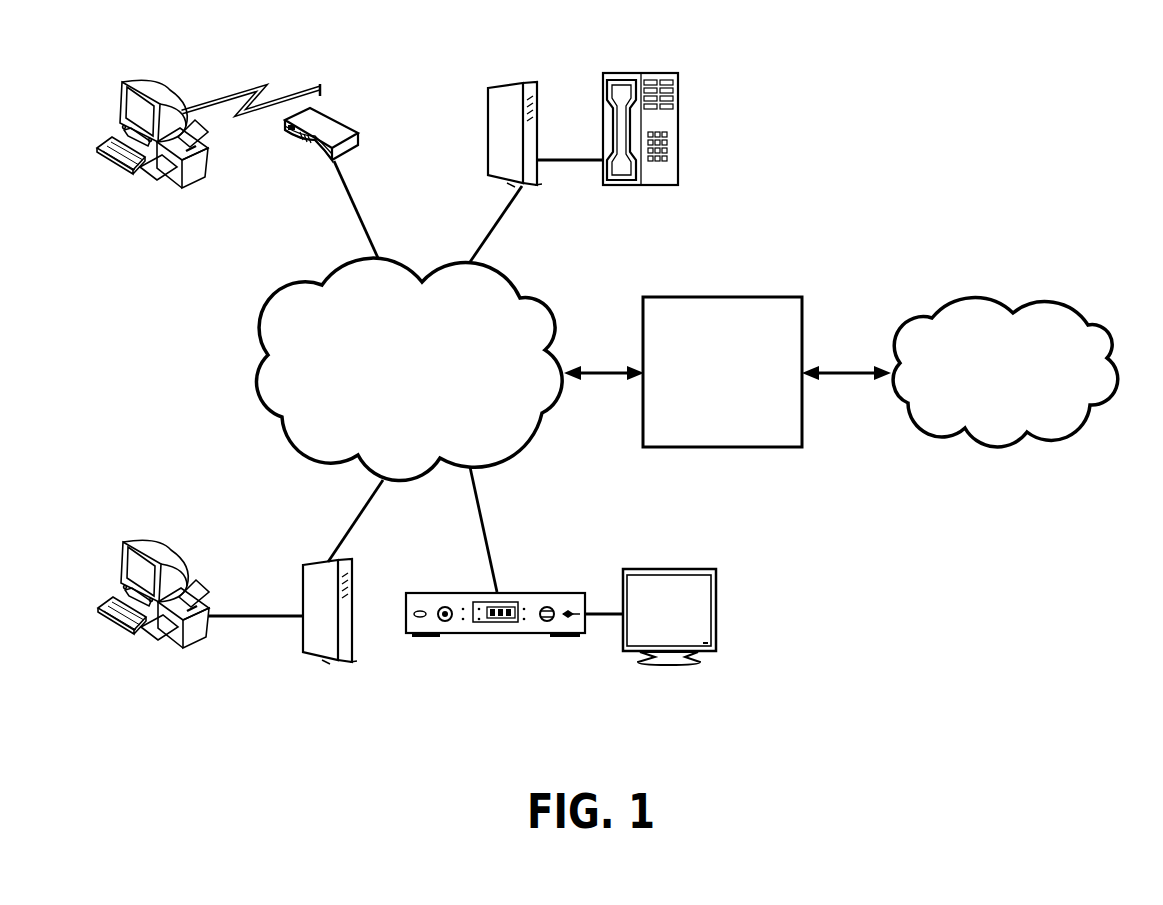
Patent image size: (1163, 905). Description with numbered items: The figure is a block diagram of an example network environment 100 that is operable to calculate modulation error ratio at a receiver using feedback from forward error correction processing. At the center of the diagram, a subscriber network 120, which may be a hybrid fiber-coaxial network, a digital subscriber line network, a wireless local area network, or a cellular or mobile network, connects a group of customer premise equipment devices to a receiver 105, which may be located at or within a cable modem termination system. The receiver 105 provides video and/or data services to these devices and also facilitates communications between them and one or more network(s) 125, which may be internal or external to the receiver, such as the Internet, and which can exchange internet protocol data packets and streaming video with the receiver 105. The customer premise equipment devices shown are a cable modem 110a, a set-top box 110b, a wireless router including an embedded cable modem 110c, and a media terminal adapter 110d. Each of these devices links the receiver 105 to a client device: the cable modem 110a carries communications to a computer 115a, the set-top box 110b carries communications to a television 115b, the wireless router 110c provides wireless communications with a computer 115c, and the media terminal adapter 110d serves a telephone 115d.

The network environment 100 is at (1040, 677).
The receiver 105 is at (720, 295).
The cable modem 110a is at (330, 663).
The set-top box 110b is at (493, 635).
The wireless router 110c is at (350, 120).
The media terminal adapter 110d is at (520, 82).
The computer 115a is at (133, 543).
The television 115b is at (678, 568).
The computer 115c is at (134, 82).
The telephone 115d is at (670, 72).
The subscriber network 120 is at (340, 465).
The network(s) 125 is at (992, 448).